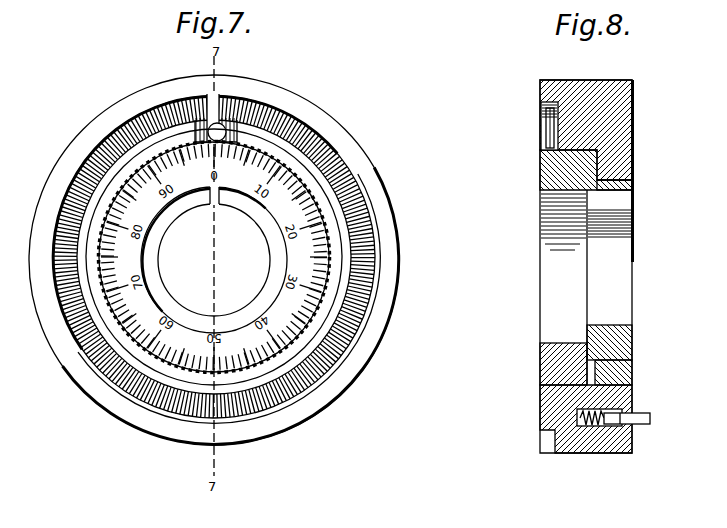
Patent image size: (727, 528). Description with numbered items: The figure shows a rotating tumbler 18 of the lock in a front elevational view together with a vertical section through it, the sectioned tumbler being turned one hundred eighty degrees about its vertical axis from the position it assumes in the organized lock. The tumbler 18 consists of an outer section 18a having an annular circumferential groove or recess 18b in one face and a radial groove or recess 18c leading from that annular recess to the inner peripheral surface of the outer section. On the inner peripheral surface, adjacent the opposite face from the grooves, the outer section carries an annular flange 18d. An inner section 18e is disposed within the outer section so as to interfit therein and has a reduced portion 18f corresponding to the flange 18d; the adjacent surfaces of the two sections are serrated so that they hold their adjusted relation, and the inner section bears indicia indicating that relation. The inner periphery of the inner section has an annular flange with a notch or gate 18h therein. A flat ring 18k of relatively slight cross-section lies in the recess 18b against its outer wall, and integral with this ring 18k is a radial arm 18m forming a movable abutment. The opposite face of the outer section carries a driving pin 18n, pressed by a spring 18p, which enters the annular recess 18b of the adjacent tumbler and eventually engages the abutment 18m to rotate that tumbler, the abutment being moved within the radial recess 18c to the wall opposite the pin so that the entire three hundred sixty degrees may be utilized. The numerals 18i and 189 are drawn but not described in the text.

In FIG. 8, the tumbler 18 is at (543, 140).
In FIG. 7, the outer section 18a is at (378, 203).
In FIG. 8, the outer section 18a is at (634, 97).
In FIG. 7, the annular circumferential groove 18b is at (325, 158).
In FIG. 8, the annular circumferential groove 18b is at (557, 124).
In FIG. 7, the radial groove 18c is at (186, 127).
In FIG. 8, the annular flange 18d is at (634, 163).
In FIG. 8, the inner section 18e is at (548, 183).
In FIG. 8, the reduced portion 18f is at (635, 188).
In FIG. 8, the notch or gate 18h is at (623, 205).
In FIG. 7, the bezel rim 18i is at (82, 160).
In FIG. 7, the flat ring 18k is at (380, 248).
In FIG. 8, the flat ring 18k is at (543, 103).
In FIG. 7, the radial arm 18m is at (222, 110).
In FIG. 8, the radial arm 18m is at (546, 121).
In FIG. 8, the driving pin 18n is at (650, 419).
In FIG. 8, the spring 18p is at (595, 426).
In FIG. 8, the knob body 189 is at (620, 299).